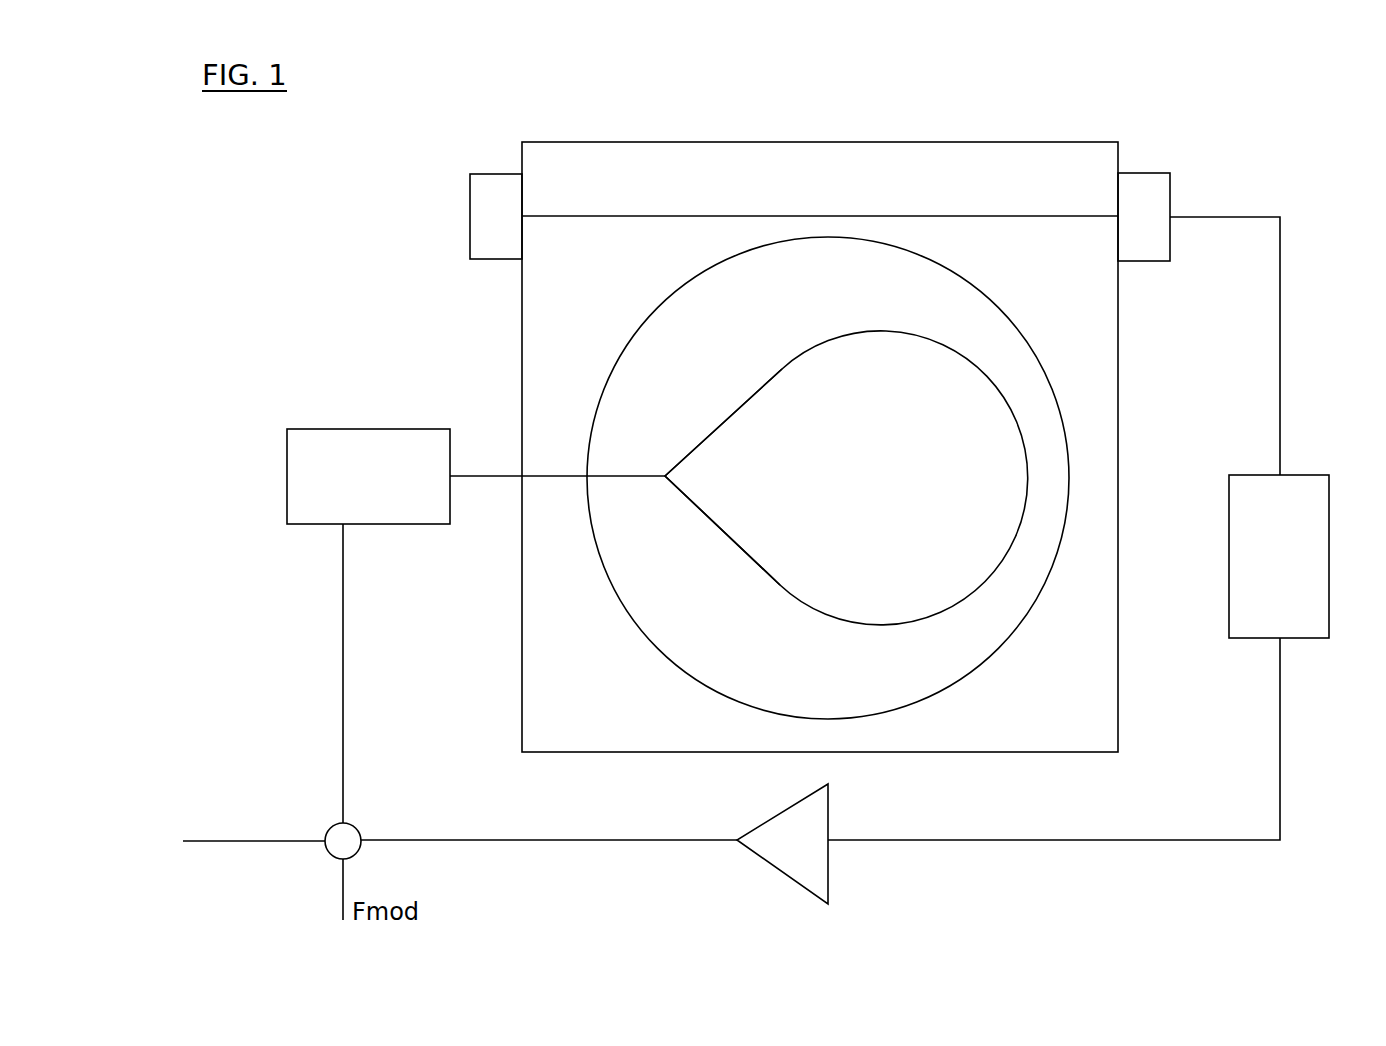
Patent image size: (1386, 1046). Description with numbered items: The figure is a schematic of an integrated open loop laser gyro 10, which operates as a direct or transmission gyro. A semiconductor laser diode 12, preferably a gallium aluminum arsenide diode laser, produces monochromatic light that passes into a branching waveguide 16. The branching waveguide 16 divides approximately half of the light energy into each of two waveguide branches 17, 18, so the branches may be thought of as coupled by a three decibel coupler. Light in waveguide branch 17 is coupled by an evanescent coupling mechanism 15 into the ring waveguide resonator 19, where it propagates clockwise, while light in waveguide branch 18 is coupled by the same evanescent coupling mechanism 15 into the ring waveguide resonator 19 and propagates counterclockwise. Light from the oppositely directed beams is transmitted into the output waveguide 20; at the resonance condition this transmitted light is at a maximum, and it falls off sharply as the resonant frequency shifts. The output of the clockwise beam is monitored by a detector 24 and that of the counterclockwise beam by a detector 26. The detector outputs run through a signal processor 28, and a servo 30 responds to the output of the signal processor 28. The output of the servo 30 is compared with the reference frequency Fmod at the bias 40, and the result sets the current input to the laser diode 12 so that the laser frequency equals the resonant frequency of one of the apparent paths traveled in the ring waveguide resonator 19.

The open loop laser gyro 10 is at (638, 117).
The semiconductor laser diode 12 is at (322, 428).
The evanescent coupling mechanism 15 is at (1037, 480).
The branching waveguide 16 is at (629, 475).
The waveguide branch 17 is at (740, 398).
The waveguide branch 18 is at (748, 571).
The ring waveguide resonator 19 is at (968, 672).
The output waveguide 20 is at (1000, 216).
The detector 24 is at (1147, 173).
The detector 26 is at (483, 173).
The signal processor 28 is at (1303, 642).
The servo 30 is at (830, 866).
The bias 40 is at (327, 828).